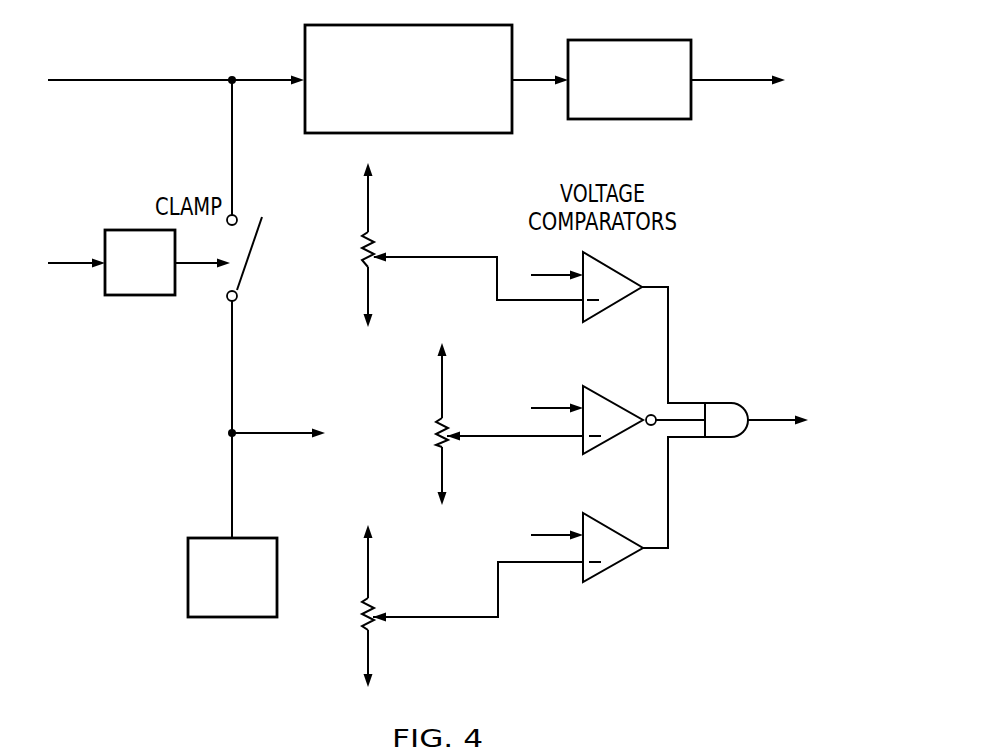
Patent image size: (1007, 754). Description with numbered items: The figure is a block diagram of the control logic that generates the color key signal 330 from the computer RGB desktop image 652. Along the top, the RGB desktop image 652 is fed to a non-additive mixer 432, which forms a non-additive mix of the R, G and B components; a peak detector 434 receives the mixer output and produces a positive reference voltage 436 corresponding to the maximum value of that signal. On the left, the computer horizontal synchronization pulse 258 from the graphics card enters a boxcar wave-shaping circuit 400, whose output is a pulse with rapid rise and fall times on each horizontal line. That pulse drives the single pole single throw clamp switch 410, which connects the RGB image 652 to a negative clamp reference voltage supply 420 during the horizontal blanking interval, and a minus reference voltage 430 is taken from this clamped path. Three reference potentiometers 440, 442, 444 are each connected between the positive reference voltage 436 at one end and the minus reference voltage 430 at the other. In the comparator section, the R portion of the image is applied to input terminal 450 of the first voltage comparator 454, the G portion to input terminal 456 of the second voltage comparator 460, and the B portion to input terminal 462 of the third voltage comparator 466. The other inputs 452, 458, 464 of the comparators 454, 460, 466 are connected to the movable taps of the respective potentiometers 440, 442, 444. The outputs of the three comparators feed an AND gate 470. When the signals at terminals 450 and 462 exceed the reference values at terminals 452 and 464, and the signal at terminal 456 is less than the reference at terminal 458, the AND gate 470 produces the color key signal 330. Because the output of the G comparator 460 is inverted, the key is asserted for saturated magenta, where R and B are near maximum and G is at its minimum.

The computer RGB desktop image 652 is at (67, 80).
The non-additive mixer 432 is at (304, 50).
The peak detector 434 is at (693, 100).
The positive reference voltage 436 is at (760, 78).
The boxcar wave-shaping circuit 400 is at (118, 230).
The computer horizontal synchronization pulse 258 is at (50, 262).
The clamp switch 410 is at (228, 298).
The minus reference voltage 430 is at (293, 436).
The negative clamp reference voltage supply 420 is at (188, 580).
The reference potentiometer 440 is at (370, 240).
The reference potentiometer 442 is at (446, 420).
The reference potentiometer 444 is at (374, 600).
The input terminal 450 is at (582, 262).
The input terminal 452 is at (580, 305).
The first voltage comparator 454 is at (630, 275).
The input terminal 456 is at (580, 393).
The input terminal 458 is at (580, 445).
The second voltage comparator 460 is at (608, 393).
The input terminal 462 is at (582, 528).
The input terminal 464 is at (580, 568).
The third voltage comparator 466 is at (615, 565).
The AND gate 470 is at (713, 401).
The color key signal 330 is at (790, 425).